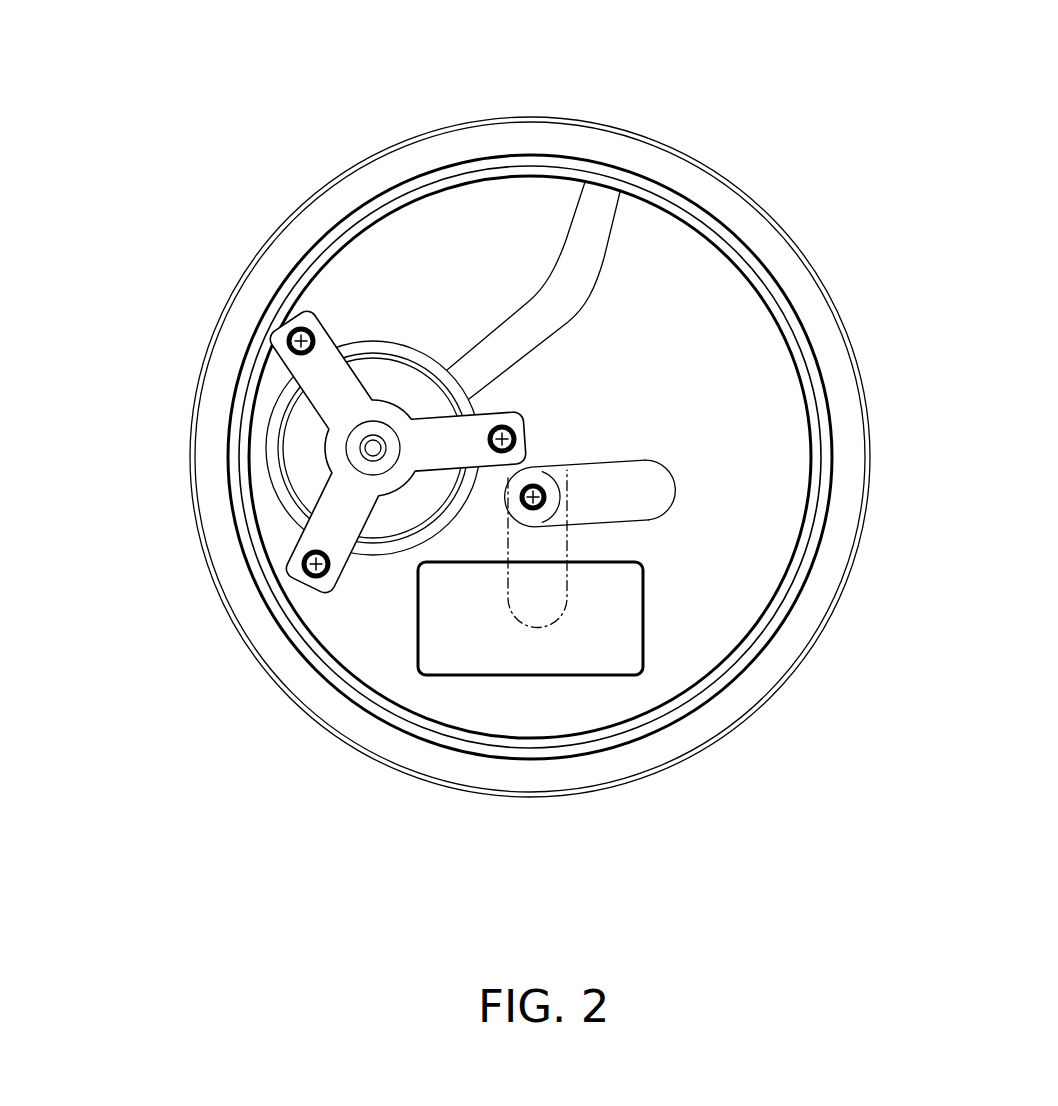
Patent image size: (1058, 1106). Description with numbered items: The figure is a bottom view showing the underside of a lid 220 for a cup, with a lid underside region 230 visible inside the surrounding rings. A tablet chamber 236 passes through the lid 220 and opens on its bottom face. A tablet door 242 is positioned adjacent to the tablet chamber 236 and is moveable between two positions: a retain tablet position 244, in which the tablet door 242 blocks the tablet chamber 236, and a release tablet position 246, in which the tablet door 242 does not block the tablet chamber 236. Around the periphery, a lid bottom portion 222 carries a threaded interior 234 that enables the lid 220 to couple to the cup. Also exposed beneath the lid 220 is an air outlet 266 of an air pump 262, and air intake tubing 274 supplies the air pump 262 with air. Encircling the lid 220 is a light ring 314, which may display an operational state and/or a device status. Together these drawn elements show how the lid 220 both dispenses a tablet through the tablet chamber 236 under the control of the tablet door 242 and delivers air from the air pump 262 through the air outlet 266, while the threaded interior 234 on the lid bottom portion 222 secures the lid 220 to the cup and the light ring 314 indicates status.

The lid 220 is at (662, 140).
The lid bottom portion 222 is at (765, 262).
The base plate 230 is at (415, 267).
The threaded interior 234 is at (773, 317).
The tablet chamber 236 is at (523, 678).
The tablet door 242 is at (581, 460).
The retain tablet position 244 is at (586, 638).
The release tablet position 246 is at (692, 487).
The air pump 262 is at (282, 507).
The air outlet 266 is at (360, 453).
The air intake tubing 274 is at (565, 243).
The light ring 314 is at (197, 362).